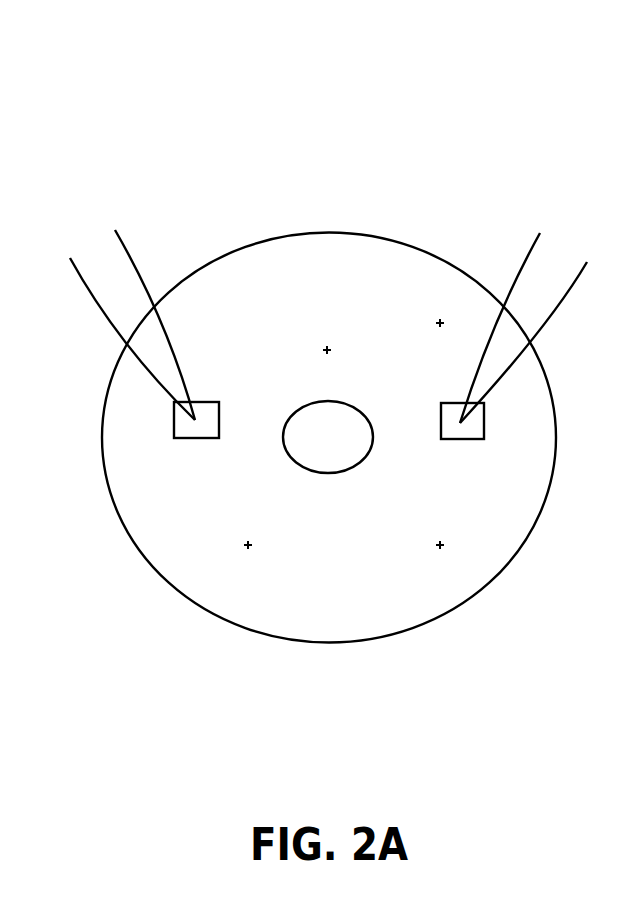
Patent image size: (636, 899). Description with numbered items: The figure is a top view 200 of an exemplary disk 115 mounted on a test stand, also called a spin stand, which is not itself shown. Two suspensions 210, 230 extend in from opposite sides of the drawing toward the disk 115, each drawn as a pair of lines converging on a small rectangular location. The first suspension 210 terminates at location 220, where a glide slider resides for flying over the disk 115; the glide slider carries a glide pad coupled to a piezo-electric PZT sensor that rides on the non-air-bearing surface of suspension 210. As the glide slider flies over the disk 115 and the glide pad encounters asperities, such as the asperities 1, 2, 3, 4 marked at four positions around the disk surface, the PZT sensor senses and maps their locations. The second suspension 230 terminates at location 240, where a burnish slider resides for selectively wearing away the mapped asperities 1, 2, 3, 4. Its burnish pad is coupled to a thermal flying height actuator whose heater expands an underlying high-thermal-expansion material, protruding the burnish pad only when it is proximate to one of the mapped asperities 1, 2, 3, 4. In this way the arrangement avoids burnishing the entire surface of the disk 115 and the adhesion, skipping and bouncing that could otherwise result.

The top view 200 is at (350, 24).
The disk 115 is at (324, 232).
The suspension 210 is at (140, 263).
The location 220 is at (200, 410).
The suspension 230 is at (522, 262).
The location 240 is at (458, 412).
The asperity 1 is at (322, 344).
The asperity 2 is at (435, 316).
The asperity 3 is at (433, 539).
The asperity 4 is at (242, 539).